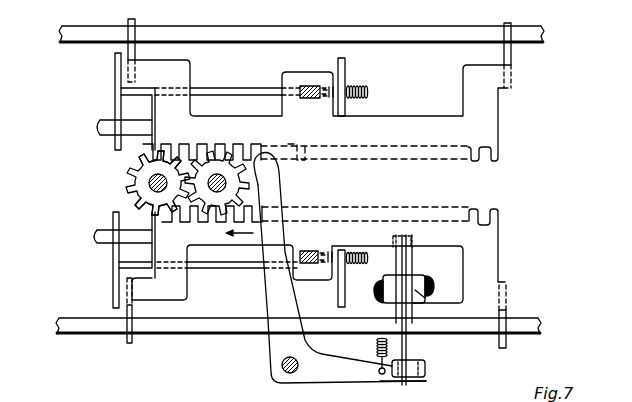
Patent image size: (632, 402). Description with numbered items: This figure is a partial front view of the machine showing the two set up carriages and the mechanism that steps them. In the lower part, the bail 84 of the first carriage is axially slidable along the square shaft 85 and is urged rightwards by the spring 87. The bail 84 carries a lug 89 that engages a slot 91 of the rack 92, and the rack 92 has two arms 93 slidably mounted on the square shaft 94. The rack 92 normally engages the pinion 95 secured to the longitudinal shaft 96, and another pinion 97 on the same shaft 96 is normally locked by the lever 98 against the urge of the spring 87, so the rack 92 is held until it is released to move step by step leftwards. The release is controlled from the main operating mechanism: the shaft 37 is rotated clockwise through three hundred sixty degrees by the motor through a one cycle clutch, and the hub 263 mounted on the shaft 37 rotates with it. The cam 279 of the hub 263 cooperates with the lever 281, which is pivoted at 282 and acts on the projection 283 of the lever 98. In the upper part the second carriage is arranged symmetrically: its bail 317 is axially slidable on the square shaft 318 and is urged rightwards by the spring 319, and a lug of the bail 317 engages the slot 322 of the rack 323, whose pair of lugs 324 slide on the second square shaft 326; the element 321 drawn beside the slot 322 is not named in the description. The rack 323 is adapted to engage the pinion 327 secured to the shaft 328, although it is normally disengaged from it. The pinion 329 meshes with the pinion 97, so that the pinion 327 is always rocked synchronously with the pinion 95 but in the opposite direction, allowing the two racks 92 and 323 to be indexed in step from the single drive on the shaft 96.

The second square shaft 326 is at (65, 41).
The lugs 324 is at (127, 51).
The bail 317 is at (235, 88).
The rod 321 is at (300, 98).
The slot 322 is at (307, 86).
The spring 319 is at (362, 88).
The rack 323 is at (498, 145).
The square shaft 318 is at (97, 128).
The longitudinal shaft 96 is at (228, 158).
The pinion 95 is at (219, 222).
The pinion 327 is at (143, 153).
The shaft 328 is at (127, 180).
The pinion 329 is at (132, 200).
The pinion 97 is at (235, 178).
The lever 98 is at (276, 175).
The bail 84 is at (247, 270).
The lug 89 is at (300, 262).
The slot 91 is at (307, 248).
The spring 87 is at (346, 254).
The square shaft 85 is at (96, 237).
The cam 279 is at (398, 246).
The lever 281 is at (409, 265).
The shaft 37 is at (430, 284).
The hub 263 is at (418, 292).
The rack 92 is at (500, 231).
The arms 93 is at (126, 310).
The square shaft 94 is at (68, 320).
The pivot 282 is at (426, 365).
The projection 283 is at (428, 381).